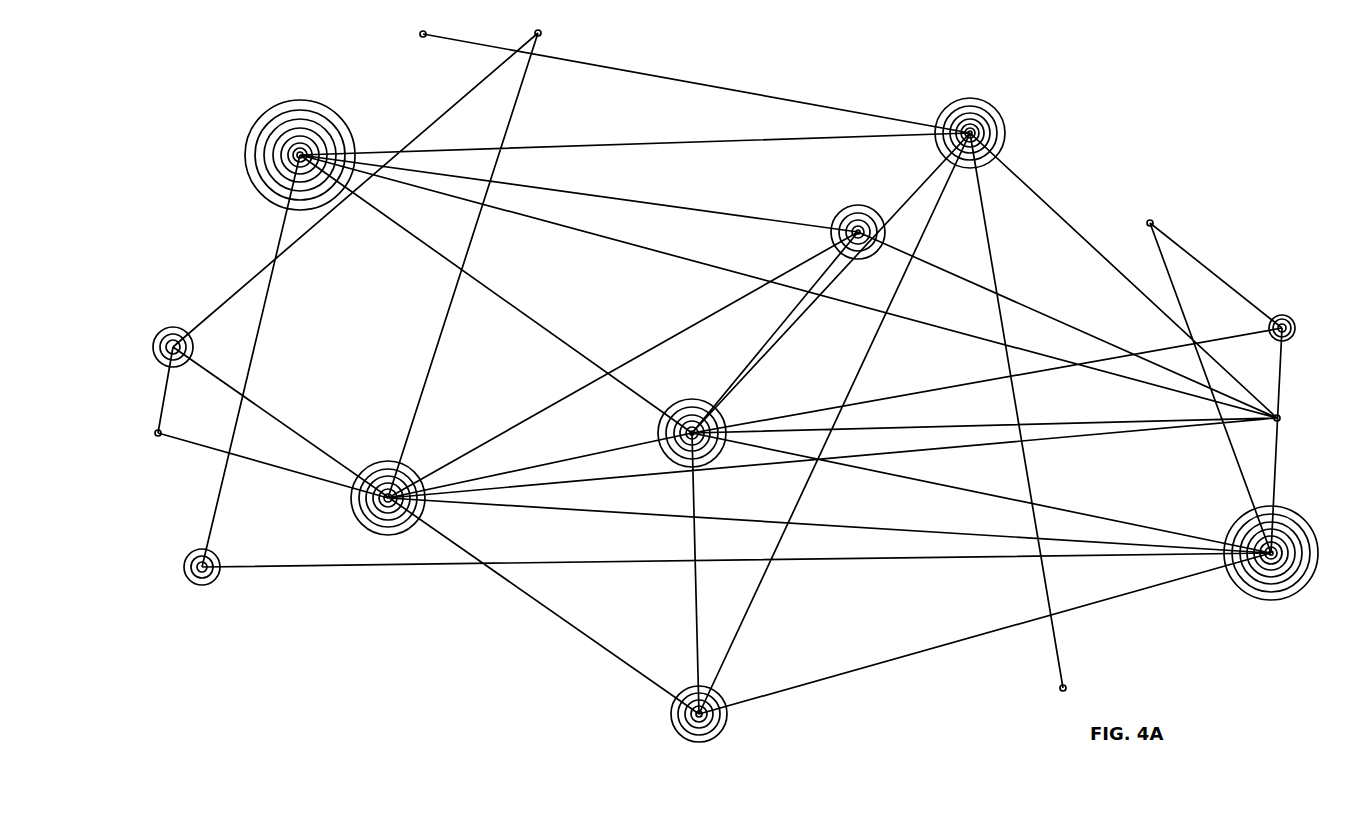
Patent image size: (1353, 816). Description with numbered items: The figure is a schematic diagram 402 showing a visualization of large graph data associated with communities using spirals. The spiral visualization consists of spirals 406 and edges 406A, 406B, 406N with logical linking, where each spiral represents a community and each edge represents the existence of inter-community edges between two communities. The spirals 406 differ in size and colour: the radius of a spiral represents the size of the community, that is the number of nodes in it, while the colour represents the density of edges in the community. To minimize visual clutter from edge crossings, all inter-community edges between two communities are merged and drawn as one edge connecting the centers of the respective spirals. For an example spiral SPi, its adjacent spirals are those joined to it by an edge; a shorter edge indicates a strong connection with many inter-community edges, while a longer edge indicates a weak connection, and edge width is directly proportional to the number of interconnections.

The schematic diagram 402 is at (803, 702).
The spirals 406 is at (292, 95).
The spiral SPi is at (287, 155).
The edge 406A is at (986, 173).
The edge 406B is at (948, 182).
The edge 406N is at (990, 234).